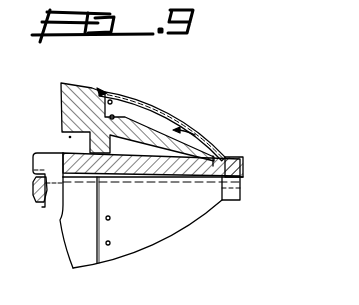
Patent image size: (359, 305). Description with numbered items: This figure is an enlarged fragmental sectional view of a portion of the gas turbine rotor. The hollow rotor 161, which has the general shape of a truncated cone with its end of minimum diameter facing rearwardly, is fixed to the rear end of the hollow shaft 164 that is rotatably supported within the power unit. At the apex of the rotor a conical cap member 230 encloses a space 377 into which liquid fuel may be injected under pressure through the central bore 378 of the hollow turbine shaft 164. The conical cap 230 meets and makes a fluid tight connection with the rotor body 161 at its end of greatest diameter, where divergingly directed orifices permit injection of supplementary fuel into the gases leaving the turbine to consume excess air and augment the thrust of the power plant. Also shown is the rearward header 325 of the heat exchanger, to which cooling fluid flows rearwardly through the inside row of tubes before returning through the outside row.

The hollow rotor 161 is at (83, 103).
The rearward header 325 is at (113, 116).
The space 377 is at (162, 127).
The central bore 378 is at (137, 176).
The hollow shaft 164 is at (43, 205).
The conical cap member 230 is at (202, 207).